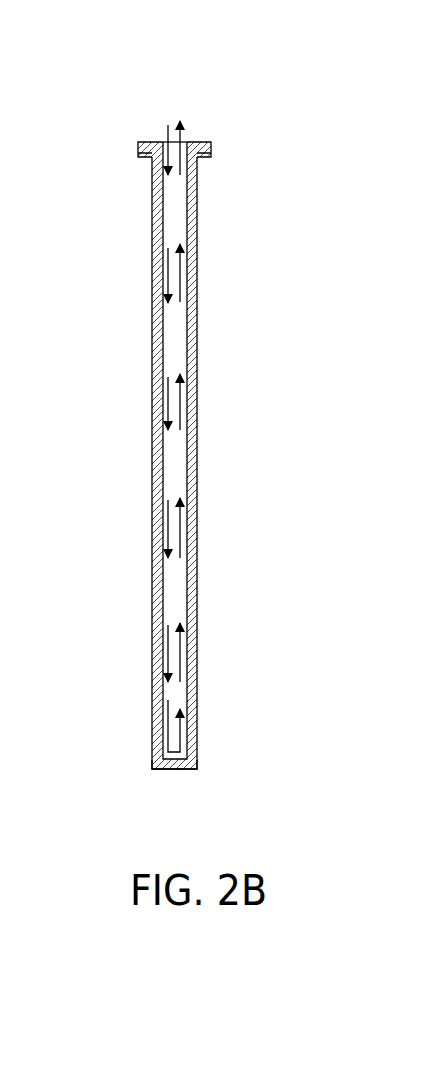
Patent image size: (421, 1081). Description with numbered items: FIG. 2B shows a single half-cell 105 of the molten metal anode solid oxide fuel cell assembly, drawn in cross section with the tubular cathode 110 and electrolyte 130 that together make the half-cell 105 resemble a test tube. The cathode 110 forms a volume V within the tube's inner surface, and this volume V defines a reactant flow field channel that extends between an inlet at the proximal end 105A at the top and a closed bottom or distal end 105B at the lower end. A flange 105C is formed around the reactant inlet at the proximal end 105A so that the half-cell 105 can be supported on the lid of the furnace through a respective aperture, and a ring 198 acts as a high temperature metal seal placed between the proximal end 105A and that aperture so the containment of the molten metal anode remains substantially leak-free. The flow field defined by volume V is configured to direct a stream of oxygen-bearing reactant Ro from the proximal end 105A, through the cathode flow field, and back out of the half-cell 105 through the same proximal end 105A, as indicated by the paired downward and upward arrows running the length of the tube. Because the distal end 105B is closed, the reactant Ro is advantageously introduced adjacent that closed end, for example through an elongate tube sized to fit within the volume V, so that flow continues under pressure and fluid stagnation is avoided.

The half-cell 105 is at (233, 112).
The proximal end 105A is at (211, 148).
The distal end 105B is at (198, 765).
The flange 105C is at (138, 148).
The ring 198 is at (200, 158).
The cathode 110 is at (198, 378).
The electrolyte 130 is at (152, 578).
The oxygen-bearing reactant Ro is at (163, 128).
The volume V is at (178, 588).